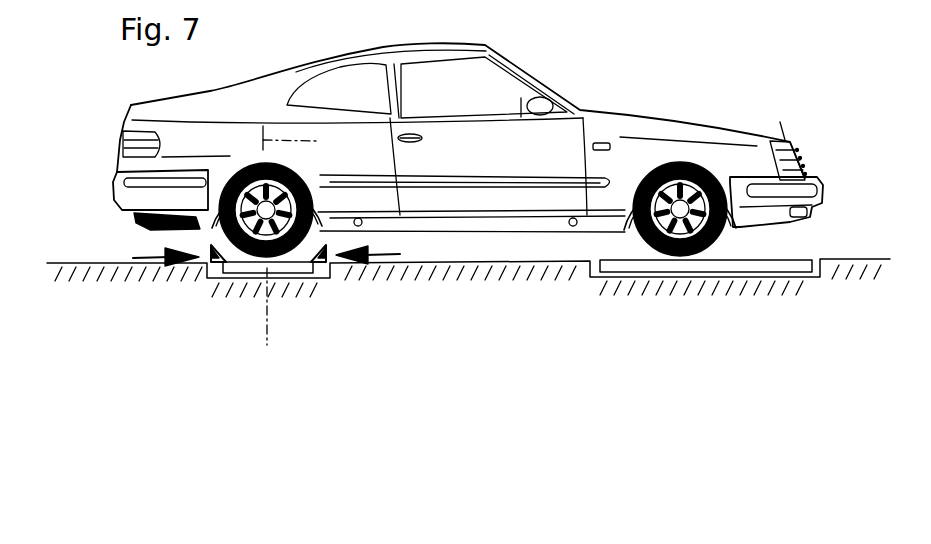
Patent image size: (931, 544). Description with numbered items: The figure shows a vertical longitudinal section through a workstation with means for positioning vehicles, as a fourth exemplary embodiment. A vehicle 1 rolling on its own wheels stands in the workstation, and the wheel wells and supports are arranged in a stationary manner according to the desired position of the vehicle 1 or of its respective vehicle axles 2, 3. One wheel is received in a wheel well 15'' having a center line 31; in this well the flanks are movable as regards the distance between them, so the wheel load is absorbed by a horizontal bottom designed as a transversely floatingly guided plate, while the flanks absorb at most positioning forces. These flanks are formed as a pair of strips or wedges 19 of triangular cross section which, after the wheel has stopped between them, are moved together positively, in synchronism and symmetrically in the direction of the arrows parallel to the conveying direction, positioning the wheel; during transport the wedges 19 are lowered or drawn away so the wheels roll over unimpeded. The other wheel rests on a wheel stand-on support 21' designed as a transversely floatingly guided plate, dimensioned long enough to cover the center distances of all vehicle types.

The vehicle 1 is at (428, 44).
The vehicle axle 2 is at (703, 158).
The vehicle axle 3 is at (243, 156).
The center line 31 is at (305, 235).
The wedges 19 is at (210, 266).
The wheel well 15'' is at (299, 315).
The wheel stand-on support 21' is at (706, 318).